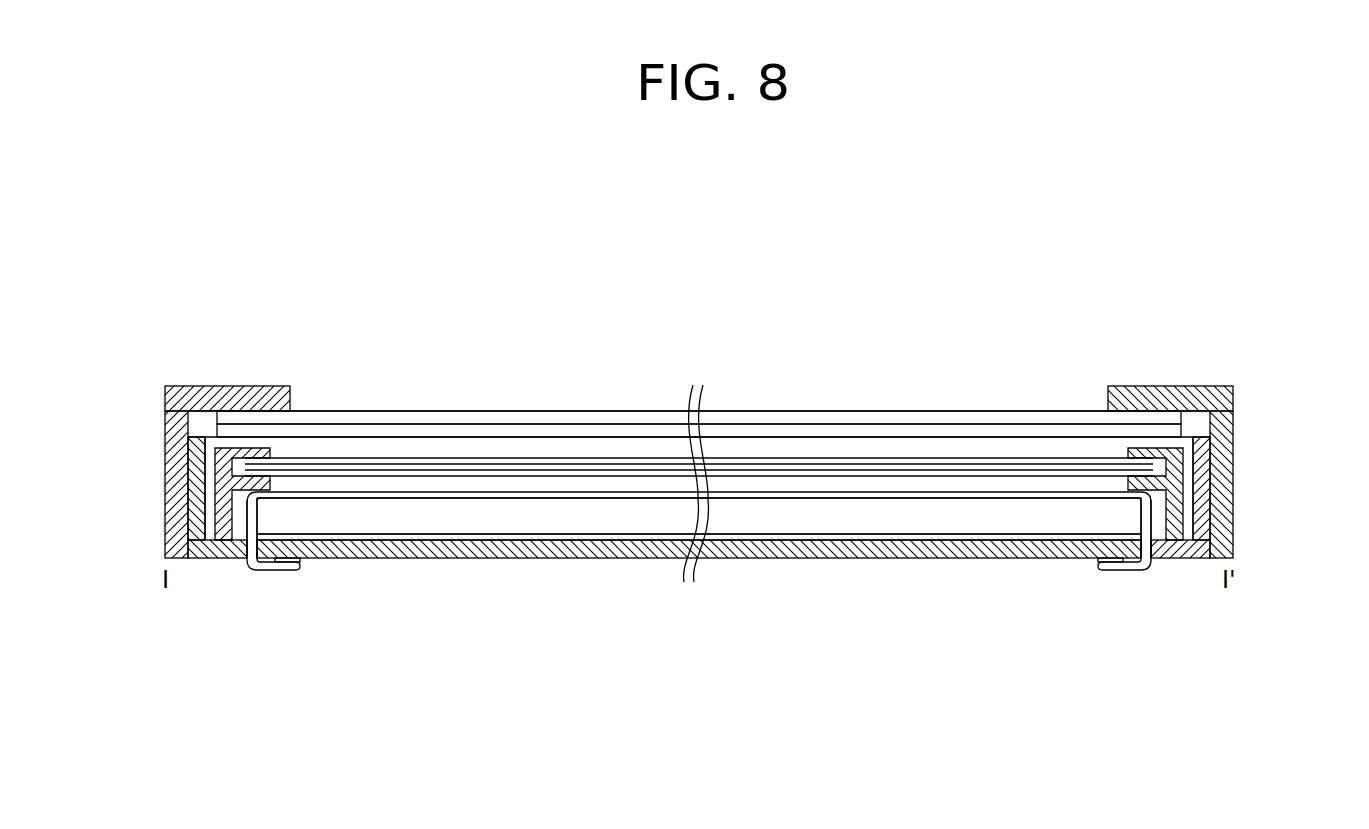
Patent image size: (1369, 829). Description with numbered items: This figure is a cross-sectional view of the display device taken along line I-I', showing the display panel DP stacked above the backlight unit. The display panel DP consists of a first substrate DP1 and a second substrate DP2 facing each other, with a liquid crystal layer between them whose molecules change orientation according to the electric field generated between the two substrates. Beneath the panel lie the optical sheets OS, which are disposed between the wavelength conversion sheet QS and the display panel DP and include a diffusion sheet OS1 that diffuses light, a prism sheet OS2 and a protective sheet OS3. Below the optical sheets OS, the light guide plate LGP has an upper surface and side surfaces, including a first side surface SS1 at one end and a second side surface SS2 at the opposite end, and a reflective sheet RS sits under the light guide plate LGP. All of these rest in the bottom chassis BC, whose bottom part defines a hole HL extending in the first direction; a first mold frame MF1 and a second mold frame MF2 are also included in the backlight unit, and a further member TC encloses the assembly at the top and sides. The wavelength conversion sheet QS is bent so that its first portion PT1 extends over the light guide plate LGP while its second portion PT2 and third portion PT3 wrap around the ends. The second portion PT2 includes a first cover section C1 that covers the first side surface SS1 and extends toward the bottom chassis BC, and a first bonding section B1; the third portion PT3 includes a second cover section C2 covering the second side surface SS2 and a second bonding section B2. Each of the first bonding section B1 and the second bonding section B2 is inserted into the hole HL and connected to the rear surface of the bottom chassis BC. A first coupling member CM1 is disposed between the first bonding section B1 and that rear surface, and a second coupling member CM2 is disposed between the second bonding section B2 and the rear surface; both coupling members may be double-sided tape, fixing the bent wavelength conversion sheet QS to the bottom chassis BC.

The top chassis TC is at (1237, 405).
The first mold frame MF1 is at (1213, 453).
The bottom chassis BC is at (1205, 477).
The second mold frame MF2 is at (1198, 496).
The display panel DP is at (699, 353).
The first substrate DP1 is at (988, 430).
The second substrate DP2 is at (937, 417).
The optical sheets OS is at (699, 373).
The diffusion sheet OS1 is at (742, 470).
The prism sheet OS2 is at (792, 467).
The protective sheet OS3 is at (843, 462).
The light guide plate LGP is at (580, 510).
The reflective sheet RS is at (527, 538).
The wavelength conversion sheet QS is at (699, 619).
The first portion of quantum dot sheet PT1 is at (485, 492).
The second portion PT2 is at (347, 592).
The third portion PT3 is at (1048, 592).
The first bonding section B1 is at (292, 563).
The second bonding section B2 is at (1106, 563).
The first cover section C1 is at (325, 558).
The second cover section C2 is at (1073, 558).
The first coupling member CM1 is at (280, 567).
The second coupling member CM2 is at (1118, 567).
The hole HL is at (255, 570).
The first side surface SS1 is at (240, 490).
The second side surface SS2 is at (1158, 490).